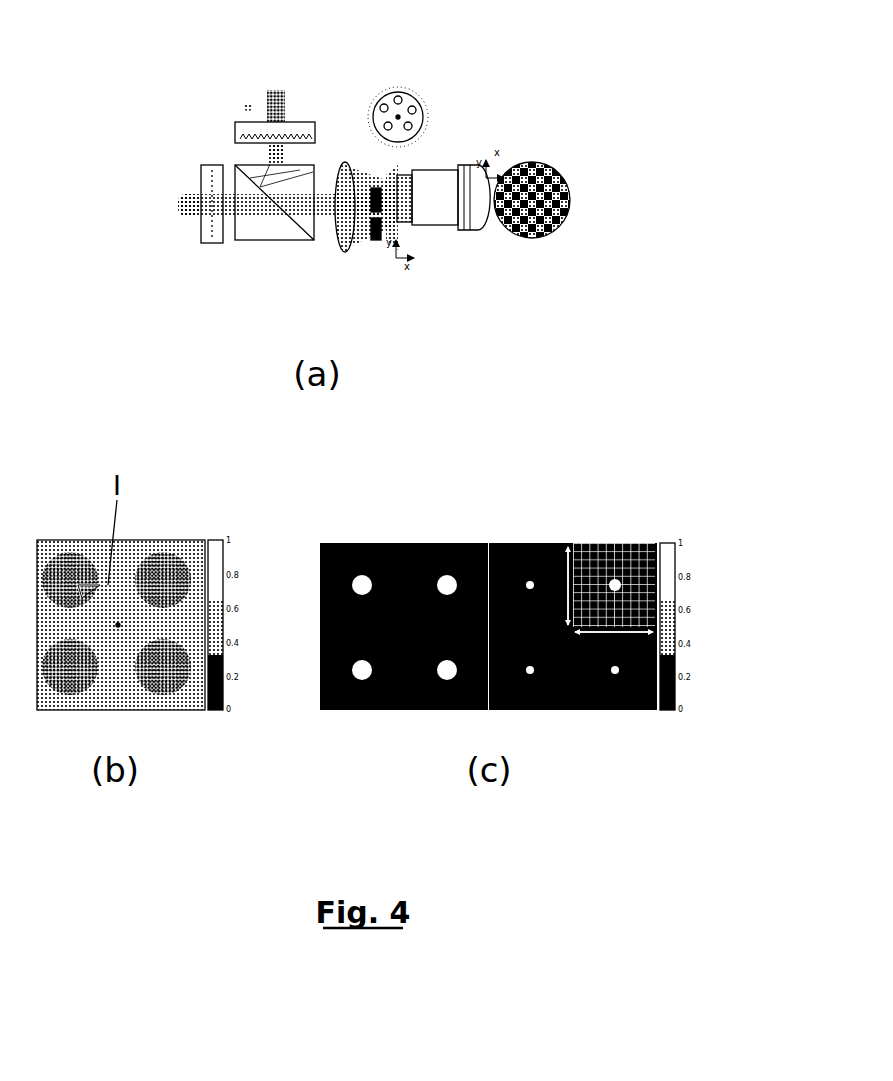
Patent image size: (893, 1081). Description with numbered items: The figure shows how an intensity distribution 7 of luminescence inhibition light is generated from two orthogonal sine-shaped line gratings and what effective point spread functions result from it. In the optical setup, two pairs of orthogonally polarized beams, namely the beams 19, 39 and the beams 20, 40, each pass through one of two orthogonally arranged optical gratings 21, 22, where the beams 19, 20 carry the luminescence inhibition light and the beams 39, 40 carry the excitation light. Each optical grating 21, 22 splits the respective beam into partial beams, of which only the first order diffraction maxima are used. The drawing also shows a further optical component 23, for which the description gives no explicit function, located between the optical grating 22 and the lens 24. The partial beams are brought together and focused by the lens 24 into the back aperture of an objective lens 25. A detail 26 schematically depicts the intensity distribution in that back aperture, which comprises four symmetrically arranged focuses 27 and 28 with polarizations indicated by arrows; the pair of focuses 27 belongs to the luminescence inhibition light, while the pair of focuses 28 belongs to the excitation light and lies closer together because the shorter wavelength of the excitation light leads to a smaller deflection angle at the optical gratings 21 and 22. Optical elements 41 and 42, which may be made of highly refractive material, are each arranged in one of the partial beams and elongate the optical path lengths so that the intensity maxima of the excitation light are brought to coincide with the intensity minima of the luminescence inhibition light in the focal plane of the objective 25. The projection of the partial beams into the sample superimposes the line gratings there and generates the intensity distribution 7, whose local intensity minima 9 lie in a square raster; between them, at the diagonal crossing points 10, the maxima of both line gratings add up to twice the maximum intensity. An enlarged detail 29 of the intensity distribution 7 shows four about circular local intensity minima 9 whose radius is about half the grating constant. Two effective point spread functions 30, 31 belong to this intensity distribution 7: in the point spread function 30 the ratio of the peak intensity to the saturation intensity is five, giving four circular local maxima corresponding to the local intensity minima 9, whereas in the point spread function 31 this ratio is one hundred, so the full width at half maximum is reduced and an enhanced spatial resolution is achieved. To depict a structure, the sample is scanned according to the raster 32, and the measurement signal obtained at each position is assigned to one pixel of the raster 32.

The intensity distribution 7 is at (306, 365).
The local intensity minima 9 is at (78, 587).
The crossing points 10 is at (118, 625).
The beam 19 is at (246, 70).
The beam 20 is at (155, 261).
The optical grating 21 is at (300, 122).
The optical grating 22 is at (217, 245).
The beam splitter 23 is at (285, 242).
The lens 24 is at (343, 250).
The objective lens 25 is at (433, 222).
The detail 26 is at (400, 83).
The focuses 27 is at (392, 97).
The focuses 28 is at (410, 121).
The enlarged detail 29 is at (529, 162).
The effective point spread function 30 is at (443, 538).
The effective point spread function 31 is at (552, 540).
The raster 32 is at (637, 540).
The beam 39 is at (270, 90).
The beam 40 is at (192, 207).
The optical element 41 is at (374, 186).
The optical element 42 is at (377, 242).